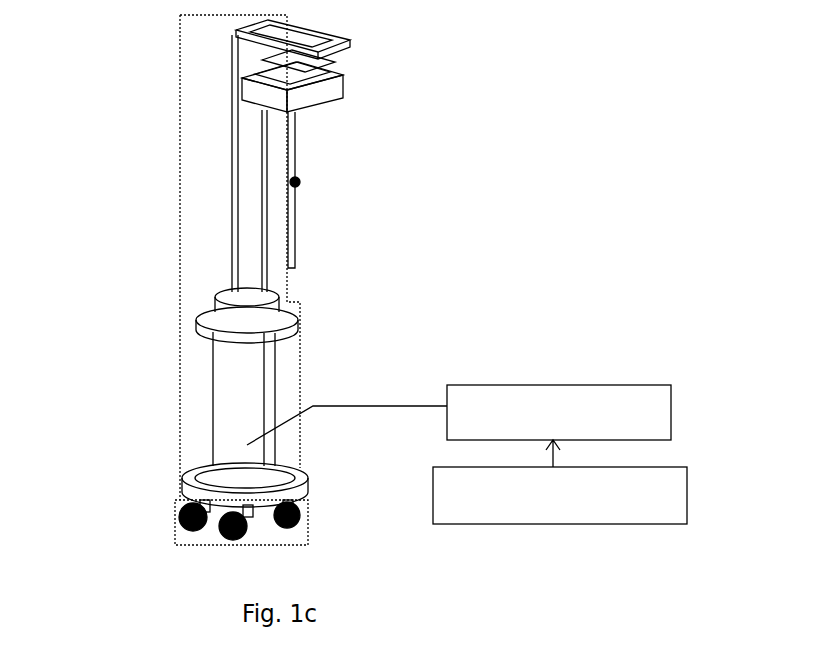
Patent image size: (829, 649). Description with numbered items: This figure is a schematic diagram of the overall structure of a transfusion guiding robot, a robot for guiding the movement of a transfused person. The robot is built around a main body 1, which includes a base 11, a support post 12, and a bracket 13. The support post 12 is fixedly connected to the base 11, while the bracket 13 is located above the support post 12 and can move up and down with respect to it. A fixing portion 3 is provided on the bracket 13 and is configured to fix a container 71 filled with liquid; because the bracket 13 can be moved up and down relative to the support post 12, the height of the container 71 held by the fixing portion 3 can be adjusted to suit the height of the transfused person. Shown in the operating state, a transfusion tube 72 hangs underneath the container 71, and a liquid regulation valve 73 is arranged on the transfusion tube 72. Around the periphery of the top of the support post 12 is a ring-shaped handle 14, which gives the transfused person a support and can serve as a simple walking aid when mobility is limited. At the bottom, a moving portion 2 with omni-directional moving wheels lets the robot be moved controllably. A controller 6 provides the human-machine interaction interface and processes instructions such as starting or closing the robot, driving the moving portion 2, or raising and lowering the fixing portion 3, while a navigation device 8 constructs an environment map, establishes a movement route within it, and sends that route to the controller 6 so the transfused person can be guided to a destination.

The main body 1 is at (298, 363).
The moving portion 2 is at (307, 532).
The fixing portion 3 is at (340, 77).
The container 71 is at (333, 68).
The transfusion tube 72 is at (297, 153).
The liquid regulation valve 73 is at (305, 185).
The bracket 13 is at (242, 142).
The ring-shaped handle 14 is at (193, 322).
The support post 12 is at (252, 463).
The base 11 is at (278, 476).
The controller 6 is at (459, 415).
The navigation device 8 is at (560, 482).